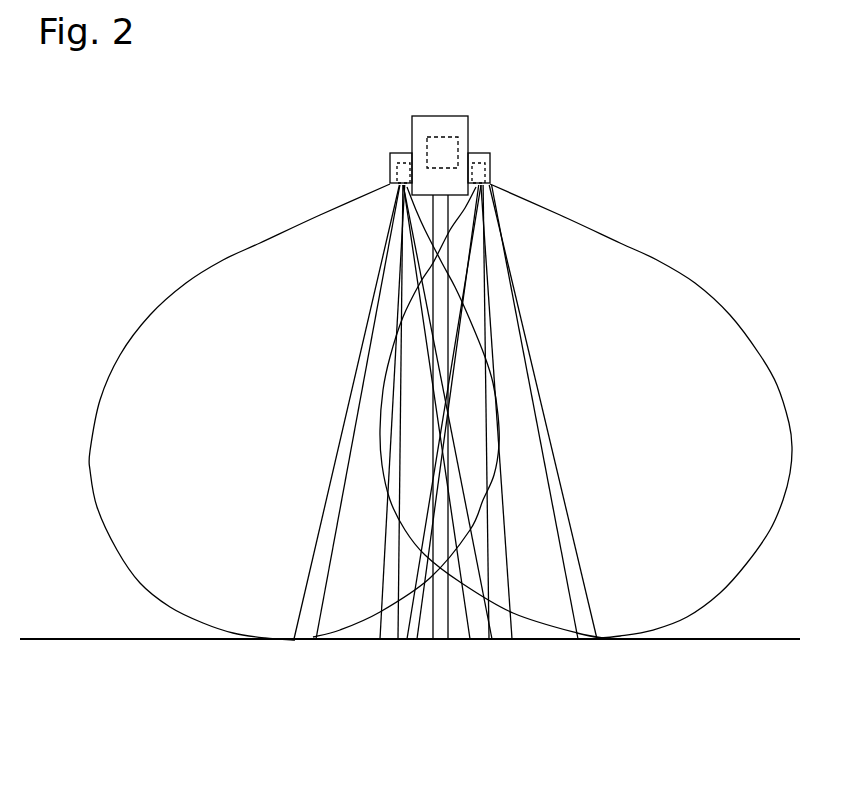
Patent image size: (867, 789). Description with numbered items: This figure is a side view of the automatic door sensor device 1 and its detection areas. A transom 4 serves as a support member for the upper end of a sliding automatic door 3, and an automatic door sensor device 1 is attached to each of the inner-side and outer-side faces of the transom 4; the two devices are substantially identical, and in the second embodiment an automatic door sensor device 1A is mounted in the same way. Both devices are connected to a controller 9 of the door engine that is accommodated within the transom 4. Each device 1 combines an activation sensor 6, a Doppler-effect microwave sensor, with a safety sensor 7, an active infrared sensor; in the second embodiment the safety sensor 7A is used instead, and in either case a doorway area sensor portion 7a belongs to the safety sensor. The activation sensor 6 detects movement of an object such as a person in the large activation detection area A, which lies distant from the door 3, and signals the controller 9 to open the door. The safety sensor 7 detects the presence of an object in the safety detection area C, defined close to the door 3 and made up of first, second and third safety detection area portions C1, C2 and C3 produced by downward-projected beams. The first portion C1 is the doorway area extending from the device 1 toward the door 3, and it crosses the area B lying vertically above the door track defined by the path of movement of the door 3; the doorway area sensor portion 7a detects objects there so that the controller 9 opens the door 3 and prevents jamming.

The automatic door sensor device 1 is at (441, 136).
The automatic door sensor device 1A is at (441, 136).
The sliding automatic door 3 is at (442, 223).
The transom 4 is at (465, 115).
The activation sensor 6 is at (390, 177).
The safety sensor 7 is at (441, 160).
The safety sensor 7A is at (441, 160).
The doorway area sensor portion 7a is at (441, 160).
The controller 9 is at (458, 137).
The activation detection area A is at (186, 286).
The area above the door track B is at (430, 602).
The safety detection area C is at (493, 472).
The first safety detection area portion C1 is at (470, 550).
The second safety detection area portion C2 is at (510, 563).
The third safety detection area portion C3 is at (656, 461).